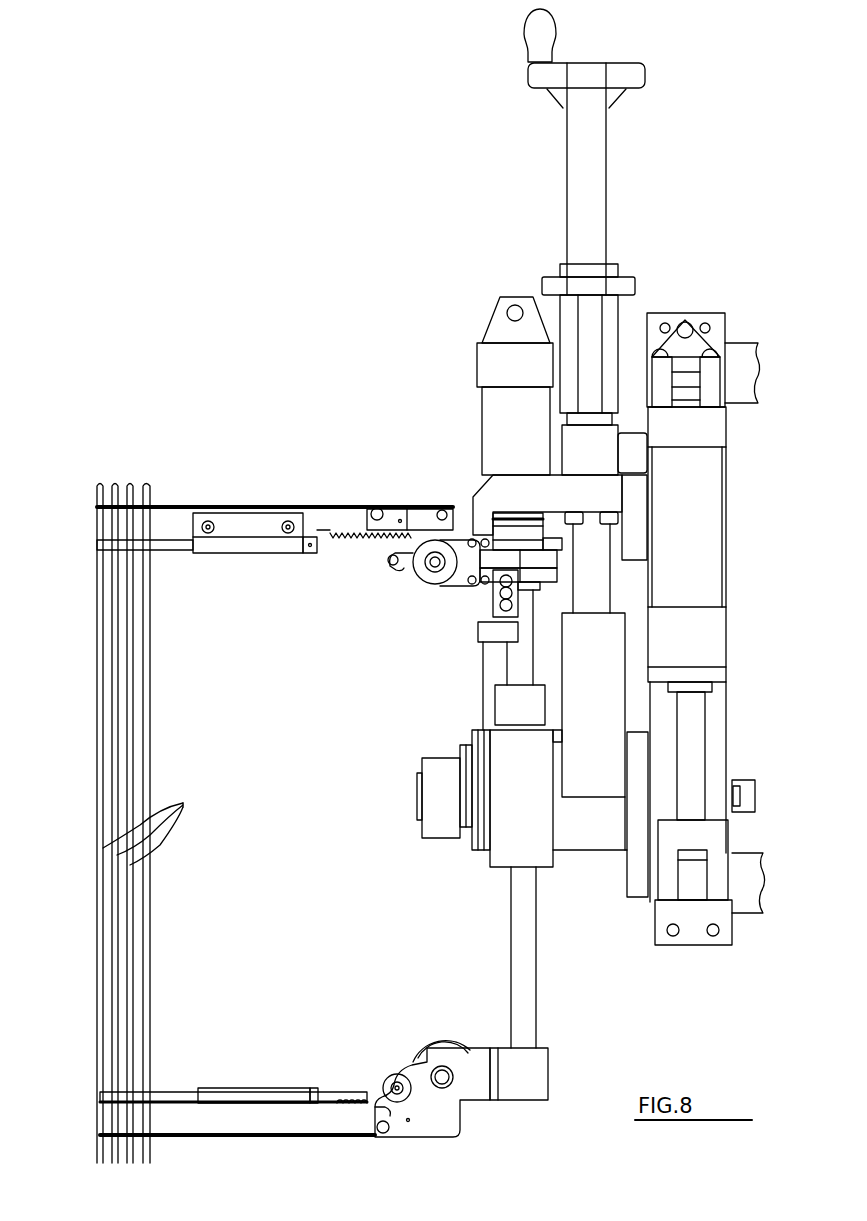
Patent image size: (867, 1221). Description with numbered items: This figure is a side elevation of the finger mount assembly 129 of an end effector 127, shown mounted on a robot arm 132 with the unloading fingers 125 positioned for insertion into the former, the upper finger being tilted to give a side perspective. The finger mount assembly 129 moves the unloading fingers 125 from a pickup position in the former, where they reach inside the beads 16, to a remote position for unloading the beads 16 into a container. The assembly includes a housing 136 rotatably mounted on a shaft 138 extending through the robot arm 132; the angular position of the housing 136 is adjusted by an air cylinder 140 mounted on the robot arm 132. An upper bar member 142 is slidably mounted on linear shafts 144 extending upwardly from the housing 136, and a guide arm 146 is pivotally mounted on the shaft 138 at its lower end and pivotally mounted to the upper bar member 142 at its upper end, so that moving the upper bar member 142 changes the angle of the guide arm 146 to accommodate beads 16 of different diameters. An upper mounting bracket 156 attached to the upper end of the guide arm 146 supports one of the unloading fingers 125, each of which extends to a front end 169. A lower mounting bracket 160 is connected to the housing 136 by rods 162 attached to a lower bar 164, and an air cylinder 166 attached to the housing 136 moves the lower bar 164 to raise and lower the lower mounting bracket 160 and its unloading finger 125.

The end effector 127 is at (430, 240).
The air cylinder 166 is at (540, 446).
The upper bar member 142 is at (614, 468).
The linear shafts 144 is at (585, 588).
The guide arm 146 is at (480, 652).
The lower bar 164 is at (540, 720).
The housing 136 is at (575, 850).
The shaft 138 is at (417, 797).
The rods 162 is at (518, 903).
The finger mount assembly 129 is at (607, 853).
The robot arm 132 is at (710, 378).
The air cylinder 140 is at (712, 538).
The front end 169 is at (96, 519).
The beads 16 is at (158, 828).
The unloading fingers 125 is at (168, 518).
The upper mounting bracket 156 is at (415, 582).
The lower mounting bracket 160 is at (548, 1068).